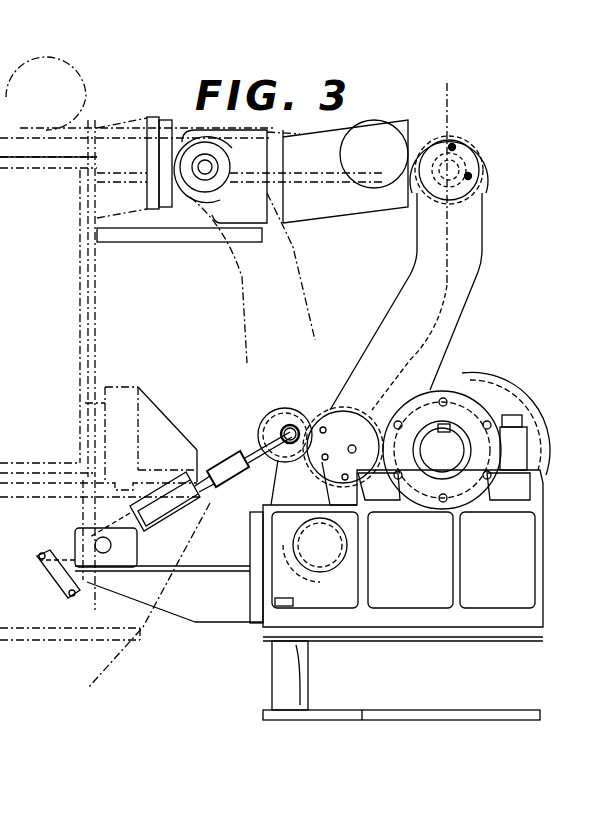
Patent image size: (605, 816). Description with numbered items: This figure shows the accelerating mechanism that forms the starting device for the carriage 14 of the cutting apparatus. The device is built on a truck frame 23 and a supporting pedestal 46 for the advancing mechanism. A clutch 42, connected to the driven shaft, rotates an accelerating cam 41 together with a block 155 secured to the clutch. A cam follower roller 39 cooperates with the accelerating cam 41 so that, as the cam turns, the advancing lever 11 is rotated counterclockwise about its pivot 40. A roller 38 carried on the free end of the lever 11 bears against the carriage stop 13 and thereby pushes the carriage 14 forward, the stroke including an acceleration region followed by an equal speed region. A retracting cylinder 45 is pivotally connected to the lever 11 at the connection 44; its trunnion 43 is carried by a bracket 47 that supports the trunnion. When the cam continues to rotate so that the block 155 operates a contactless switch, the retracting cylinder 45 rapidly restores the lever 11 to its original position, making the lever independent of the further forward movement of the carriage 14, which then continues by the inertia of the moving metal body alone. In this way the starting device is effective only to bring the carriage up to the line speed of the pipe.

The advancing lever 11 is at (472, 257).
The carriage stop 13 is at (252, 241).
The carriage 14 is at (130, 140).
The truck frame 23 is at (100, 308).
The roller 38 is at (465, 138).
The cam follower roller 39 is at (410, 560).
The pivot 40 is at (345, 568).
The accelerating cam 41 is at (546, 440).
The clutch 42 is at (452, 465).
The trunnion 43 is at (113, 557).
The pivotal connection 44 is at (320, 444).
The retracting cylinder 45 is at (217, 477).
The supporting pedestal 46 is at (540, 552).
The bracket 47 is at (188, 610).
The block 155 is at (448, 426).